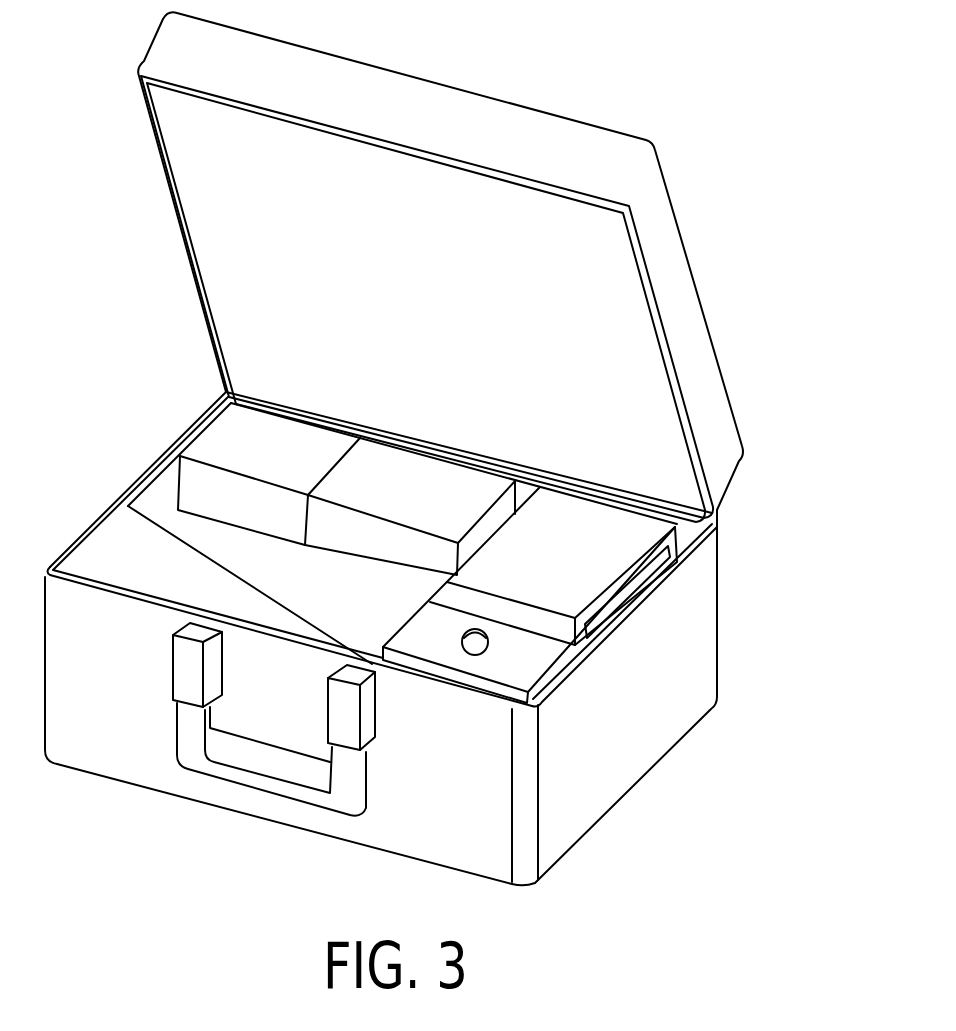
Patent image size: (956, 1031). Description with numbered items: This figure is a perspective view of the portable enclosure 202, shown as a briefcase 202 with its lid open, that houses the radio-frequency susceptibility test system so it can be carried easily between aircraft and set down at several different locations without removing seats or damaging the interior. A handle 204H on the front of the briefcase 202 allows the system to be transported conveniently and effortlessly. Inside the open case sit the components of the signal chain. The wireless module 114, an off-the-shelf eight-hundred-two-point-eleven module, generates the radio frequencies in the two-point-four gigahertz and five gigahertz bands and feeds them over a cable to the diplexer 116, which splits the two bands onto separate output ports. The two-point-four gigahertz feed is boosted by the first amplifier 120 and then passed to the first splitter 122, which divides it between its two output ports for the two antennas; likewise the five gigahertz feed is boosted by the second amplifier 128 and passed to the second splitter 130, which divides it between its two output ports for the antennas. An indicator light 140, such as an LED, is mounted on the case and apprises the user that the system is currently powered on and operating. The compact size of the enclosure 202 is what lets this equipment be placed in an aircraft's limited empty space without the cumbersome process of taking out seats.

The portable enclosure 202 is at (767, 275).
The first splitter 122 is at (108, 547).
The first amplifier 120 is at (210, 450).
The second amplifier 128 is at (360, 487).
The second splitter 130 is at (278, 618).
The diplexer 116 is at (537, 657).
The wireless module 114 is at (650, 568).
The indicator light 140 is at (496, 643).
The handle 204H is at (193, 750).